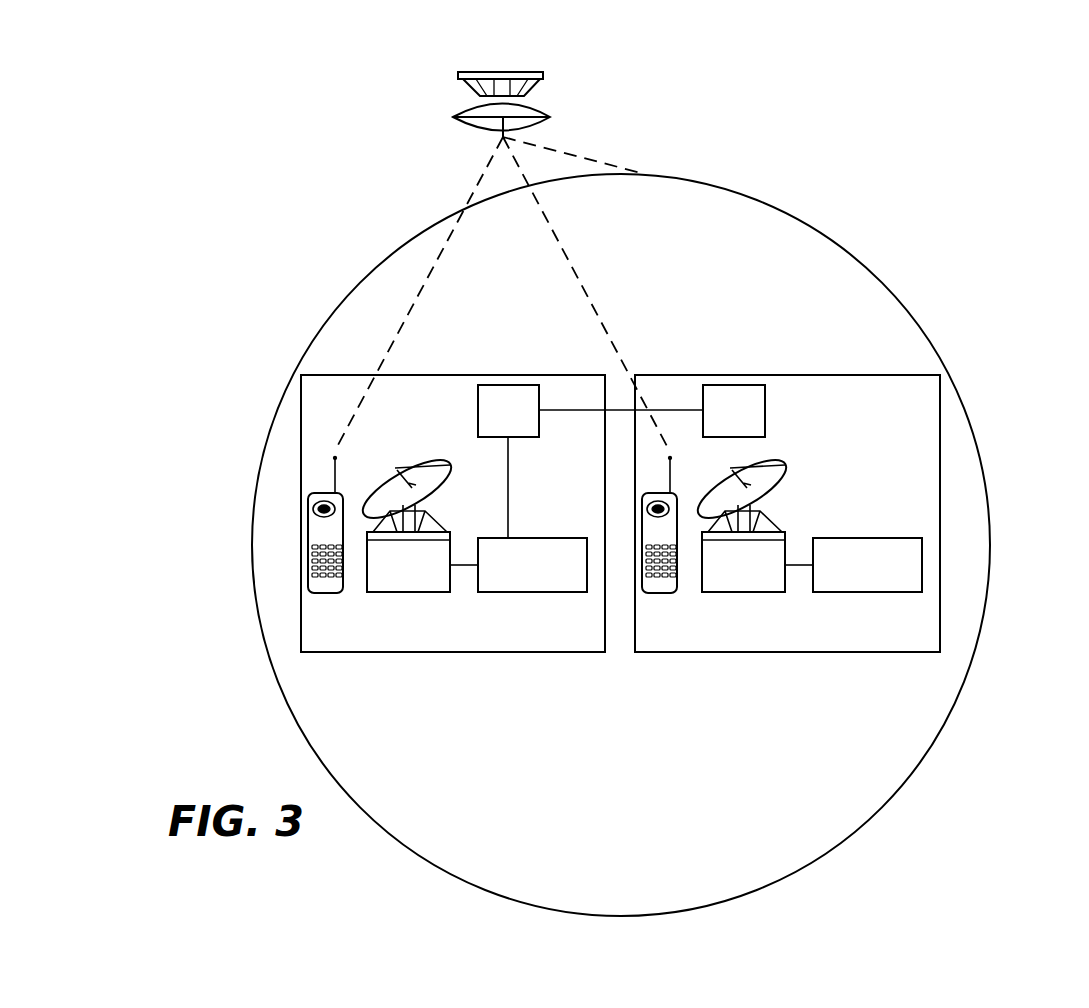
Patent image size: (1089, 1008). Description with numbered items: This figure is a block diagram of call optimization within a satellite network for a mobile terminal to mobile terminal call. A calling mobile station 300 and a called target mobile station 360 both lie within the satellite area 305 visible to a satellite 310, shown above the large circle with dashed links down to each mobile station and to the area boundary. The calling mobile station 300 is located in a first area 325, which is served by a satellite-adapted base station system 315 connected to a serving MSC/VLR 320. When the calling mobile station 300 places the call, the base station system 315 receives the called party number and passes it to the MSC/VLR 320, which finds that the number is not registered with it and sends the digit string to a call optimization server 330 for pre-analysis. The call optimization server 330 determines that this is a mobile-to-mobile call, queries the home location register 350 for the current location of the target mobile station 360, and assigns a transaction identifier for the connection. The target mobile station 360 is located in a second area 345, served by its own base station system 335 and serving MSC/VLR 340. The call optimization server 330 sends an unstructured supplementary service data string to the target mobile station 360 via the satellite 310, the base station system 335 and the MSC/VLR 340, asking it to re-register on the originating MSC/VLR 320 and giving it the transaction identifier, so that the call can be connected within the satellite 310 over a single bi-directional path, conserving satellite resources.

The Mobile Station 300 is at (343, 590).
The satellite area 305 is at (621, 545).
The satellite 310 is at (543, 105).
The satellite-adapted Base Station System 315 is at (413, 592).
The Mobile Switching Center/Visitor Location Register 320 is at (523, 538).
The area 325 is at (596, 646).
The Call Optimization Server 330 is at (478, 405).
The satellite-adapted Base Station System 335 is at (748, 592).
The Mobile Switching Center/Visitor Location Register 340 is at (858, 538).
The area 345 is at (931, 646).
The Home Location Register 350 is at (765, 405).
The Mobile Station 360 is at (678, 590).